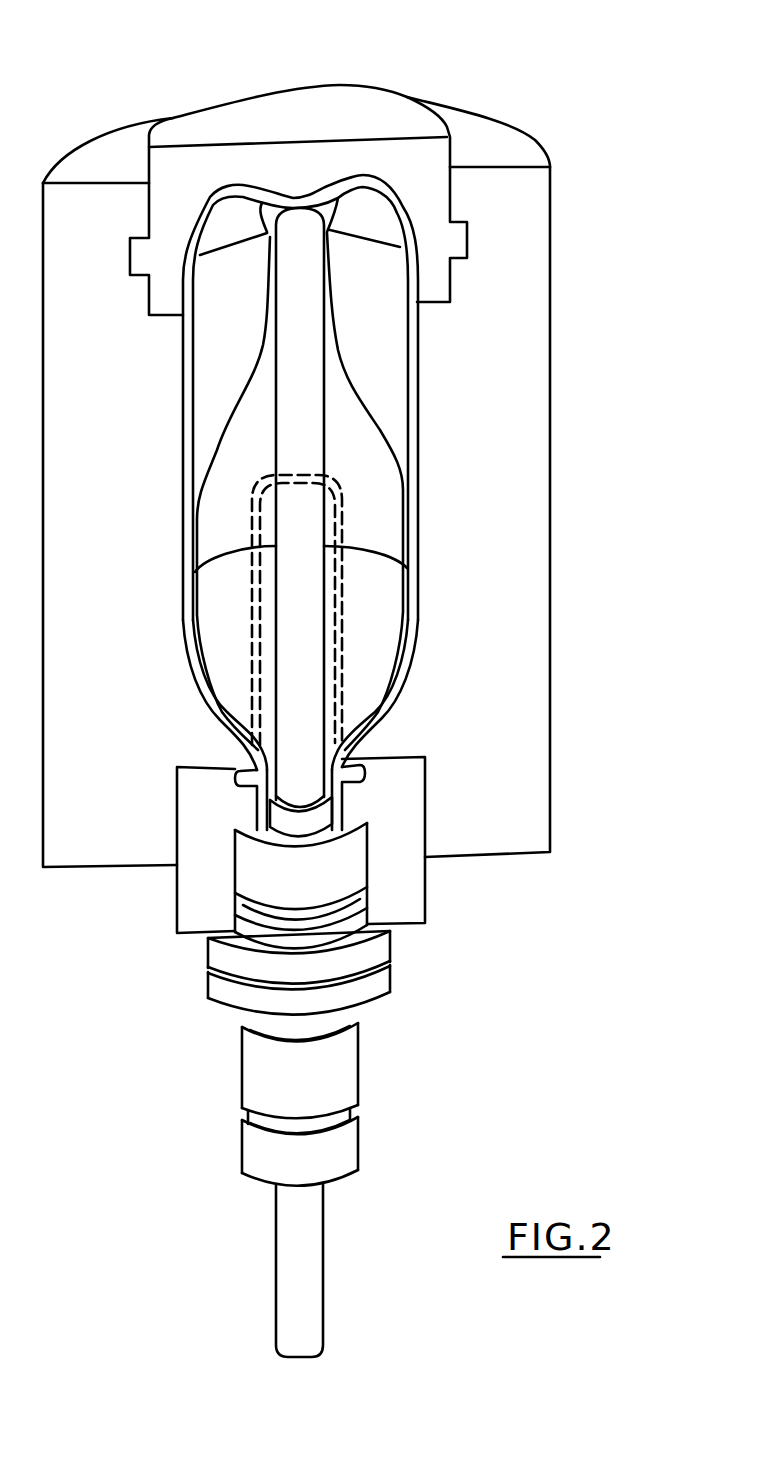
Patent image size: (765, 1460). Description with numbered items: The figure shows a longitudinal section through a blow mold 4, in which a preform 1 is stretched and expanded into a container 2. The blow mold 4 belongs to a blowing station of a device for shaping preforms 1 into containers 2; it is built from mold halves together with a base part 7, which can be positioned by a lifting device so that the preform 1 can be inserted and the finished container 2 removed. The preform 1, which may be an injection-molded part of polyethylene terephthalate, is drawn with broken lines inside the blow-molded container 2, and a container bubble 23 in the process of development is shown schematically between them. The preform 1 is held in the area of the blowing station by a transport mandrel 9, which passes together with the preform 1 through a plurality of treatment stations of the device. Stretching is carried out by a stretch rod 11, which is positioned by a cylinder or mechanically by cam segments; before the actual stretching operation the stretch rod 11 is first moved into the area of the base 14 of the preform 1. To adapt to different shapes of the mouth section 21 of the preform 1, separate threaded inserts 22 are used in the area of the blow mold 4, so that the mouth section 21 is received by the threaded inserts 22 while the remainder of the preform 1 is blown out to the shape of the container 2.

The preform 1 is at (337, 645).
The container 2 is at (410, 413).
The blow mold 4 is at (508, 482).
The base part 7 is at (387, 100).
The transport mandrel 9 is at (387, 1003).
The stretch rod 11 is at (275, 1286).
The base 14 is at (338, 476).
The mouth section 21 is at (342, 792).
The threaded inserts 22 is at (408, 883).
The container bubble 23 is at (355, 370).